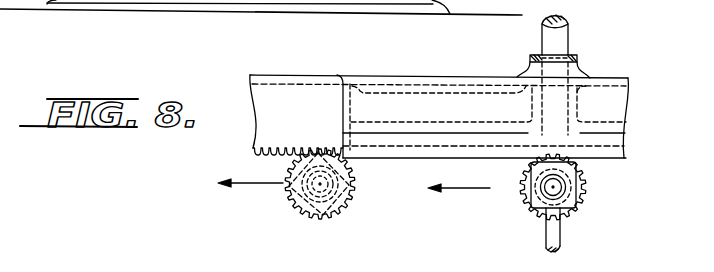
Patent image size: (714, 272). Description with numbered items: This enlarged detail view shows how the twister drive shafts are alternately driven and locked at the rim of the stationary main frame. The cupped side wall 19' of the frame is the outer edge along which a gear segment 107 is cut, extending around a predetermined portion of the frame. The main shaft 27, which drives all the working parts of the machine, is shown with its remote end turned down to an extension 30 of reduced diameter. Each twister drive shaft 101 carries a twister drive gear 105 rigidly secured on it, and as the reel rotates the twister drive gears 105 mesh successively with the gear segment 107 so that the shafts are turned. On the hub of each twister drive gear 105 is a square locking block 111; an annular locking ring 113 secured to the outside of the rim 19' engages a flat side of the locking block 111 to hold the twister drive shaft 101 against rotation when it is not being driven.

The cupped side wall 19' is at (427, 118).
The main shaft 27 is at (561, 38).
The extension 30 is at (561, 233).
The twister drive shaft 101 is at (434, 199).
The twister drive gear 105 is at (296, 210).
The gear segment 107 is at (266, 156).
The locking block 111 is at (329, 220).
The annular locking ring 113 is at (404, 159).